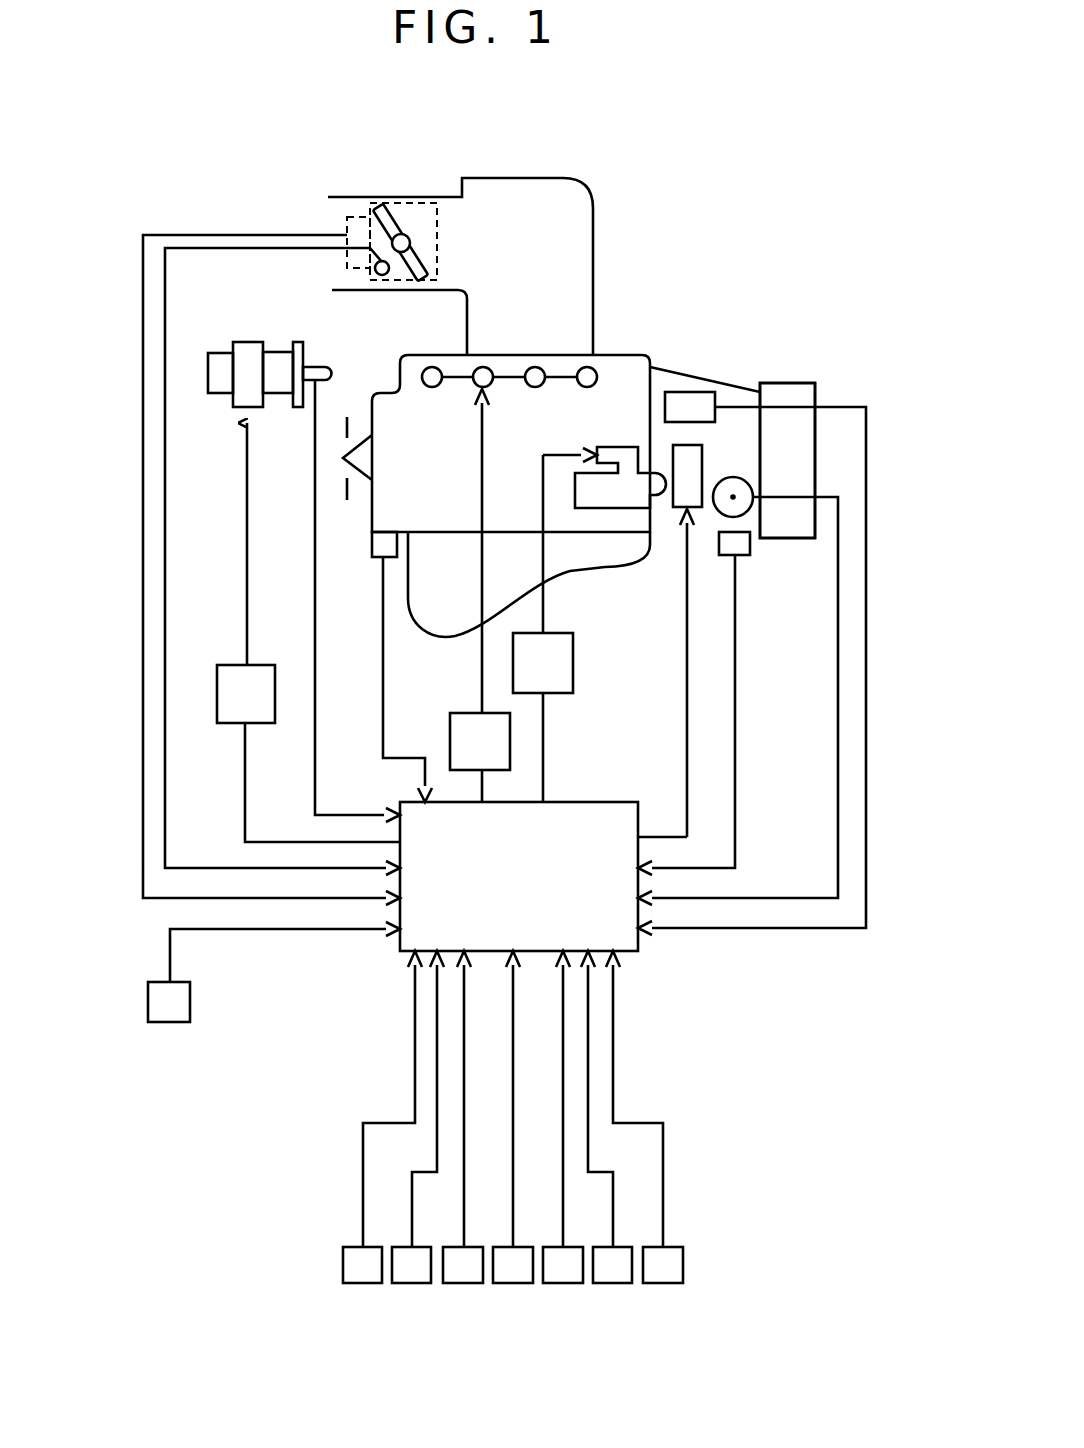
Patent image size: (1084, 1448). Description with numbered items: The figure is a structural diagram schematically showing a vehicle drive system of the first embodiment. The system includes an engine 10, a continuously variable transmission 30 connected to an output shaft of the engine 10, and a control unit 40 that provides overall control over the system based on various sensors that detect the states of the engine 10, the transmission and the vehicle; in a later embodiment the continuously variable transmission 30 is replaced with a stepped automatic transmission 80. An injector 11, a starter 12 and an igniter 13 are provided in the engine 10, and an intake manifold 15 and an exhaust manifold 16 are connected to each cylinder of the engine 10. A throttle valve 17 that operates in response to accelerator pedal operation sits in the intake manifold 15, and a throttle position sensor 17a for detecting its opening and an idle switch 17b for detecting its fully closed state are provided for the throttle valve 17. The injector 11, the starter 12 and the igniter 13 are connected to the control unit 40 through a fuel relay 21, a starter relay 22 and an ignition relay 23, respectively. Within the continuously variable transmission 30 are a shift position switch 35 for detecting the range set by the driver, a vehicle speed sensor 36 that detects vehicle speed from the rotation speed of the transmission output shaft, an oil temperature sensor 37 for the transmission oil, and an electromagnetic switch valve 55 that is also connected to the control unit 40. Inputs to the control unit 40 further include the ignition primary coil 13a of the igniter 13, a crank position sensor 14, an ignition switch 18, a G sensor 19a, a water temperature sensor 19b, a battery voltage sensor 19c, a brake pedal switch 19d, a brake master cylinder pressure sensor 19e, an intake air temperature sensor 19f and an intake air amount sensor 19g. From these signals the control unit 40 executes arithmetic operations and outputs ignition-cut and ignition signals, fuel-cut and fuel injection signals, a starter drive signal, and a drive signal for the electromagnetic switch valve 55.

The engine 10 is at (612, 355).
The injector 11 is at (432, 368).
The starter 12 is at (661, 497).
The igniter 13 is at (220, 365).
The ignition primary coil 13a is at (318, 368).
The crank position sensor 14 is at (377, 545).
The intake manifold 15 is at (513, 177).
The exhaust manifold 16 is at (437, 638).
The throttle valve 17 is at (393, 213).
The throttle position sensor 17a is at (357, 216).
The idle switch 17b is at (428, 202).
The ignition switch 18 is at (168, 1022).
The G sensor 19a is at (362, 1285).
The water temperature sensor 19b is at (412, 1285).
The battery voltage sensor 19c is at (463, 1285).
The brake pedal switch 19d is at (513, 1285).
The brake master cylinder pressure sensor 19e is at (563, 1285).
The intake air temperature sensor 19f is at (613, 1285).
The intake air amount sensor 19g is at (664, 1285).
The fuel relay 21 is at (462, 745).
The starter relay 22 is at (573, 668).
The ignition relay 23 is at (217, 686).
The continuously variable transmission 30 is at (722, 380).
The stepped automatic transmission 80 is at (787, 460).
The shift position switch 35 is at (680, 398).
The vehicle speed sensor 36 is at (743, 508).
The oil temperature sensor 37 is at (745, 550).
The control unit 40 is at (405, 942).
The electromagnetic switch valve 55 is at (700, 500).